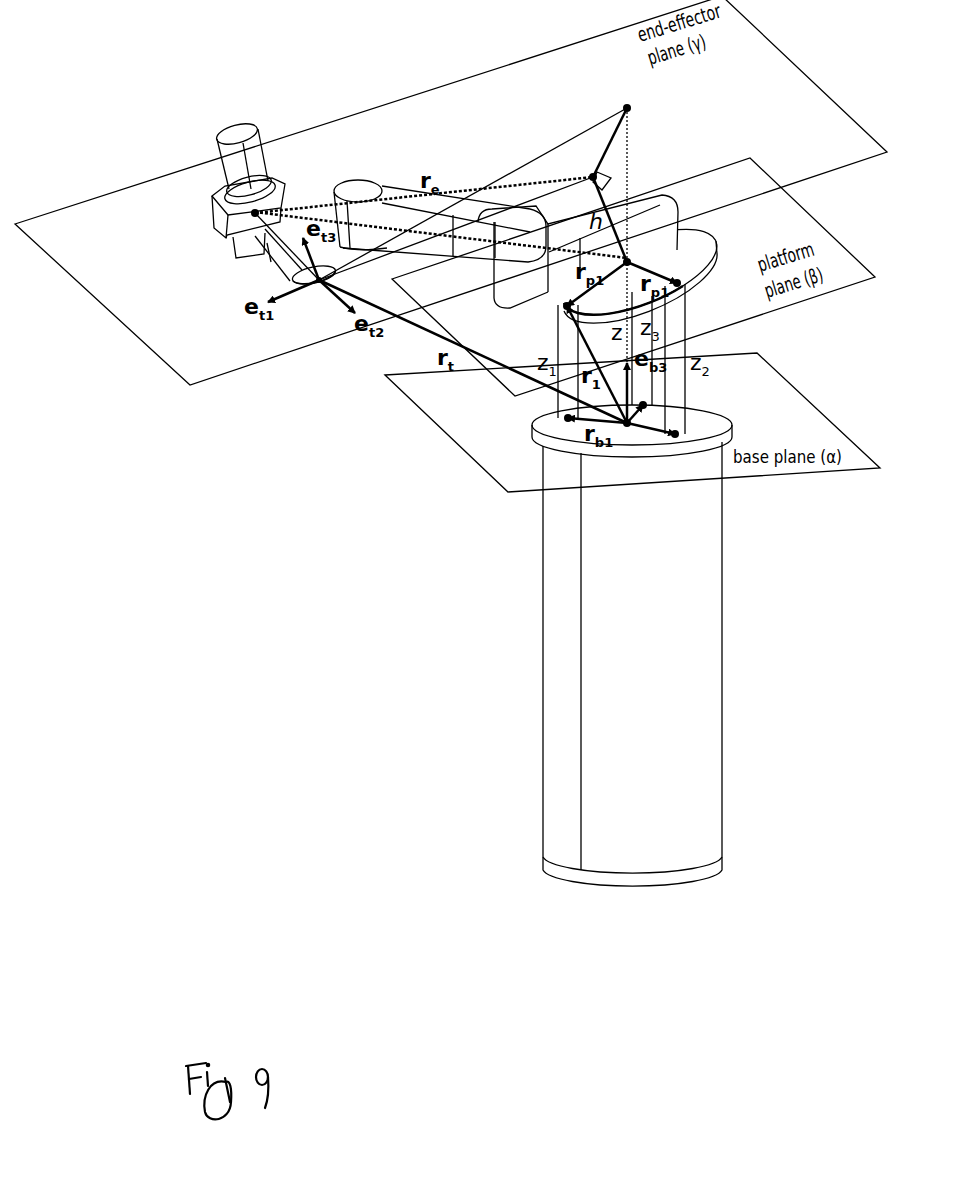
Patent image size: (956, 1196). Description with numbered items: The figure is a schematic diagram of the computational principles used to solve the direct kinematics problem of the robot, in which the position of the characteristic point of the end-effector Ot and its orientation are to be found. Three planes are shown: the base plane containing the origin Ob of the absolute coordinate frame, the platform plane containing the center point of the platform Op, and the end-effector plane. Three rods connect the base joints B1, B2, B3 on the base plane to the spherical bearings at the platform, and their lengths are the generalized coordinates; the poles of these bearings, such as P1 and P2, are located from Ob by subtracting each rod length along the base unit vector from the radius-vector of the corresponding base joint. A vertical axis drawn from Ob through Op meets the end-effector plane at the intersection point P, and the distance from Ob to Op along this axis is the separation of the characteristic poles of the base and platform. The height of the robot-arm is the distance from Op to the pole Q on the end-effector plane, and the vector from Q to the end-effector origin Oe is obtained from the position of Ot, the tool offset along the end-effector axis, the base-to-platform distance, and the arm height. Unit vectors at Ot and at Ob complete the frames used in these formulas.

The intersection point of the base axis with the end-effector plane P is at (483, 252).
The characteristic pole of the robot-arm on the end-effector plane Q is at (473, 194).
The center point of the platform Op is at (640, 276).
The origin of the absolute (base) coordinate frame Ob is at (632, 645).
The origin of the end-effector Oe is at (248, 189).
The characteristic point of the end-effector Ot is at (296, 265).
The pole of the first spherical bearing at the platform P1 is at (559, 355).
The pole of the second spherical bearing at the platform P2 is at (686, 355).
The first base joint B1 is at (556, 424).
The second base joint B2 is at (689, 424).
The third base joint B3 is at (651, 352).